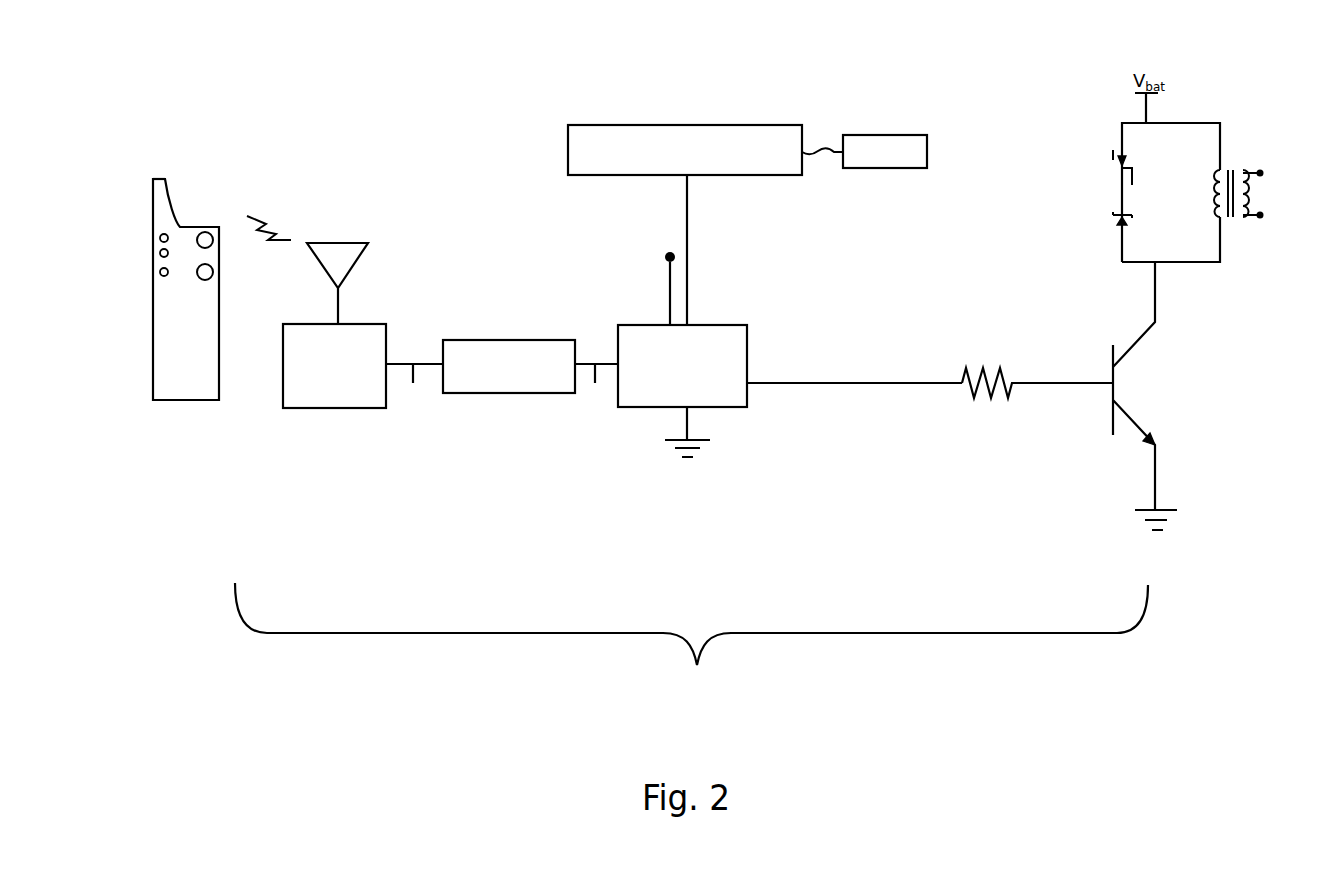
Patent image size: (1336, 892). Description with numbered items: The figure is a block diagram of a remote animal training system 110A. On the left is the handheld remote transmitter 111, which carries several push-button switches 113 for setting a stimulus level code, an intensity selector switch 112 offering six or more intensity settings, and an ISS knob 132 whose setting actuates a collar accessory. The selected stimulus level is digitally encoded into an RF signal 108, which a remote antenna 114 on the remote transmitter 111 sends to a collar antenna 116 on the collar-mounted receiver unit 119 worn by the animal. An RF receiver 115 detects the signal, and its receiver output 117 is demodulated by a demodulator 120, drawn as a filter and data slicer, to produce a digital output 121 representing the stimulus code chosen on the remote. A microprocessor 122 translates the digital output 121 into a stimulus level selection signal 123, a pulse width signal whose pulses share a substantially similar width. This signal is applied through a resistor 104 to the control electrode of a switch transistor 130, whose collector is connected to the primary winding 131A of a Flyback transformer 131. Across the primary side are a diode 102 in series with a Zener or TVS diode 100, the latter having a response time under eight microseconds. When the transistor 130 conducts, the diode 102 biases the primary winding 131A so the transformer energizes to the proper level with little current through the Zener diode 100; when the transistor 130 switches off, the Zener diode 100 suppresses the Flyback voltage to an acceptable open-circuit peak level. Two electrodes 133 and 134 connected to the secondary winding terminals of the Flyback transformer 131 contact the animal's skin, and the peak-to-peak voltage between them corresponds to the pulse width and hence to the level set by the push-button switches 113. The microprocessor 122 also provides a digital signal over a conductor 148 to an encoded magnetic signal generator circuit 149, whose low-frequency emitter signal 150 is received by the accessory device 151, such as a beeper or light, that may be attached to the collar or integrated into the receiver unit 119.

The Zener or TVS diode 100 is at (1113, 167).
The diode 102 is at (1120, 229).
The resistor 104 is at (981, 368).
The RF signal 108 is at (268, 226).
The remote animal training system 110A is at (252, 393).
The remote transmitter 111 is at (152, 380).
The intensity selector switch 112 is at (214, 240).
The push-button switches 113 is at (155, 269).
The remote antenna 114 is at (157, 178).
The RF receiver 115 is at (313, 408).
The collar antenna 116 is at (367, 255).
The receiver output 117 is at (414, 388).
The receiver unit 119 is at (691, 639).
The demodulator 120 is at (470, 394).
The digital output 121 is at (596, 390).
The microprocessor 122 is at (715, 408).
The stimulus level selection signal 123 is at (928, 383).
The switch transistor 130 is at (1113, 435).
The Flyback transformer 131 is at (1228, 224).
The primary winding 131A is at (1223, 170).
The ISS knob 132 is at (214, 272).
The electrode 133 is at (1253, 158).
The electrode 134 is at (1253, 232).
The conductor 148 is at (685, 212).
The encoded magnetic signal generator circuit 149 is at (630, 124).
The emitter signal 150 is at (825, 143).
The accessory device 151 is at (888, 135).